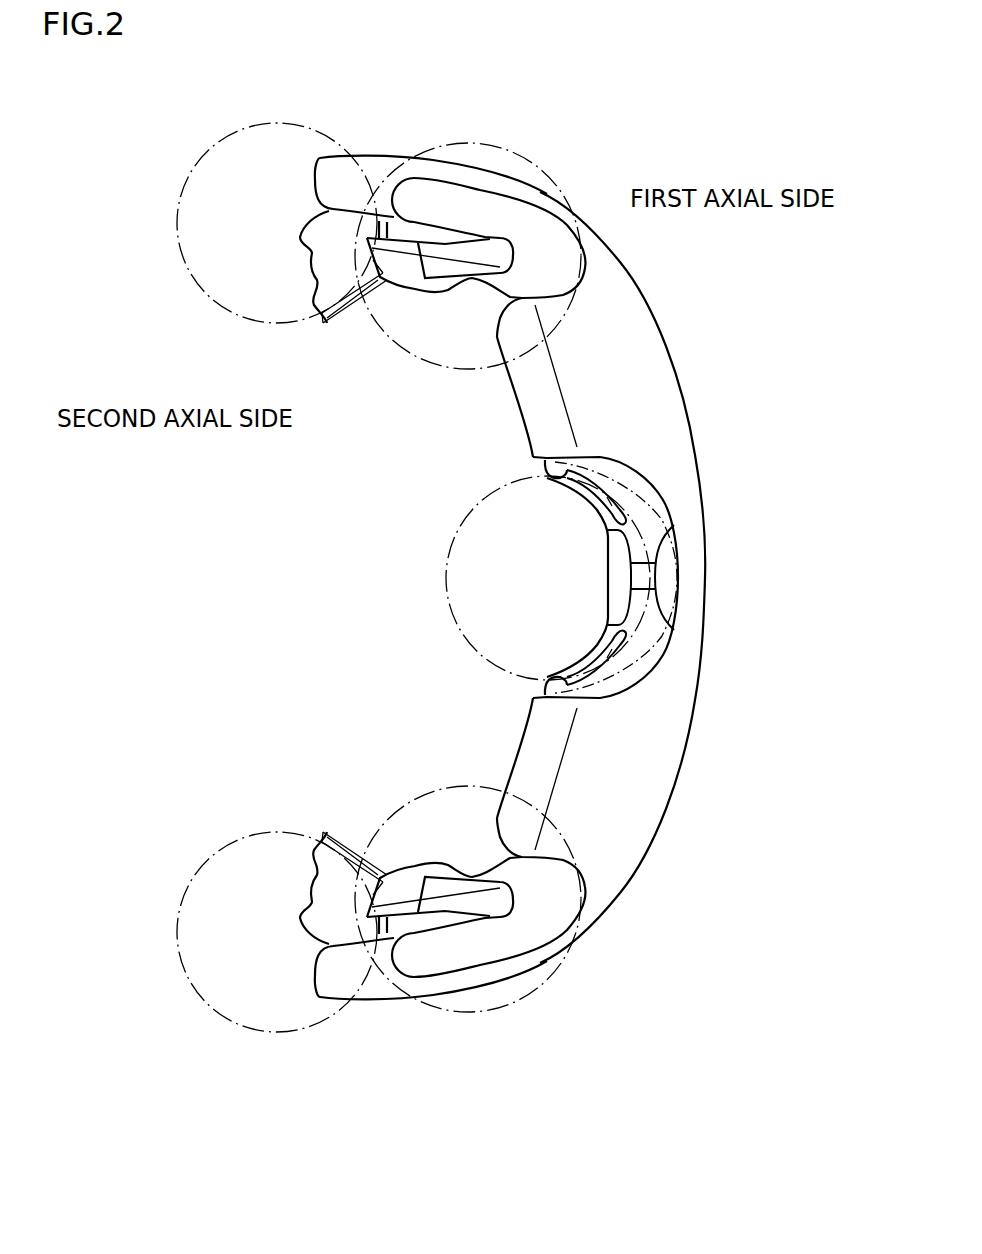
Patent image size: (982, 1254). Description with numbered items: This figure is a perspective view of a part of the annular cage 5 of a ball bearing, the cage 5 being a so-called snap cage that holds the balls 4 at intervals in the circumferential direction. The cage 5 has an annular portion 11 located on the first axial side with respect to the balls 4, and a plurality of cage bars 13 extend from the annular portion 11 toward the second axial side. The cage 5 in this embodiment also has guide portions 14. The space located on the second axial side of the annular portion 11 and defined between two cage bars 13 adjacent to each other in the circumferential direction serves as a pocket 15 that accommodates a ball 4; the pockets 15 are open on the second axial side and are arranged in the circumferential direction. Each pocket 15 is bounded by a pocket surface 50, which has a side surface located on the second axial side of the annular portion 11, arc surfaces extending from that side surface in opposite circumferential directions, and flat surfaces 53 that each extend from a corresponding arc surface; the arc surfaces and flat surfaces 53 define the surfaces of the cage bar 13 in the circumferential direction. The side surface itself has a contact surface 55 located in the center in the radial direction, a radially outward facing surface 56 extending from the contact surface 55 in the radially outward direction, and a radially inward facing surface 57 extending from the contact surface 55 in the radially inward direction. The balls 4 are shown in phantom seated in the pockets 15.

The ball 4 is at (182, 190).
The cage 5 is at (712, 476).
The annular portion 11 is at (690, 535).
The cage bar 13 is at (463, 174).
The guide portion 14 is at (433, 242).
The pocket 15 is at (334, 244).
The pocket surface 50 is at (543, 237).
The flat surface 53 is at (408, 190).
The contact surface 55 is at (647, 570).
The radially outward facing surface 56 is at (667, 585).
The radially inward facing surface 57 is at (612, 568).